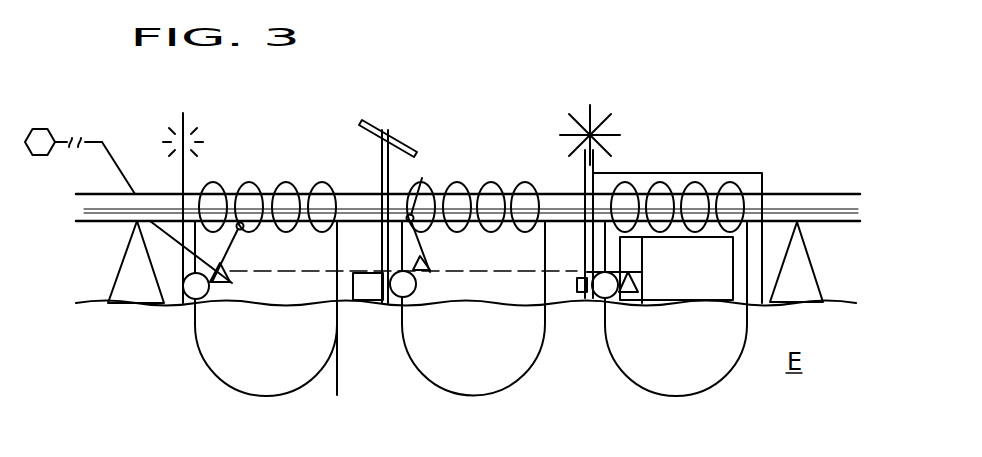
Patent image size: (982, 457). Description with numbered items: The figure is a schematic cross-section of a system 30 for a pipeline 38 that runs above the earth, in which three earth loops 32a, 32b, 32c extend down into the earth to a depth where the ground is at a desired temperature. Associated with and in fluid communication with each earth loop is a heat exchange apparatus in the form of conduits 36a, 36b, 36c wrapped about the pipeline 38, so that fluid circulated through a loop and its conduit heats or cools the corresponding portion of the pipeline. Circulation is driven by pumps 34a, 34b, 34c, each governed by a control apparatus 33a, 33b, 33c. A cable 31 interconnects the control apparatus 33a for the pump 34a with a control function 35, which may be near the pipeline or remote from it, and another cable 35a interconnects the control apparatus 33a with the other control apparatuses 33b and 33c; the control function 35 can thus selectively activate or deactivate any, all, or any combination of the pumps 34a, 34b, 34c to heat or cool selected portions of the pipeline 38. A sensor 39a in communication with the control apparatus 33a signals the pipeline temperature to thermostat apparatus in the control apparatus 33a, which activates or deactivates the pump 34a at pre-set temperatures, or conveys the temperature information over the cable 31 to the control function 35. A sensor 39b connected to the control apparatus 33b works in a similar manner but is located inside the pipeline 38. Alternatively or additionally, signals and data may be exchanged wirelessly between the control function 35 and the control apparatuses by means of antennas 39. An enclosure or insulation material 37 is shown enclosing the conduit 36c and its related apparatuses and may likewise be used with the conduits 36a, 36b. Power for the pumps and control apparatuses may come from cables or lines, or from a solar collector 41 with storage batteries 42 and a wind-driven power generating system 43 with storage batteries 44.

The system 30 is at (757, 148).
The cable 31 is at (120, 168).
The earth loop 32a is at (263, 397).
The earth loop 32b is at (470, 396).
The earth loop 32c is at (675, 397).
The control apparatus 33a is at (222, 283).
The control apparatus 33b is at (430, 273).
The control apparatus 33c is at (640, 284).
The pump 34a is at (188, 300).
The pump 34b is at (398, 300).
The pump 34c is at (603, 298).
The control function 35 is at (42, 128).
The cable 35a is at (339, 324).
The conduit 36a is at (288, 182).
The conduit 36b is at (487, 182).
The conduit 36c is at (735, 188).
The enclosure and/or insulation material 37 is at (762, 257).
The pipeline 38 is at (115, 223).
The antenna 39 is at (185, 170).
The sensor 39a is at (243, 232).
The sensor 39b is at (422, 182).
The solar collector 41 is at (386, 128).
The storage batteries 42 is at (370, 287).
The wind-driven power generating system 43 is at (594, 153).
The storage batteries 44 is at (577, 283).